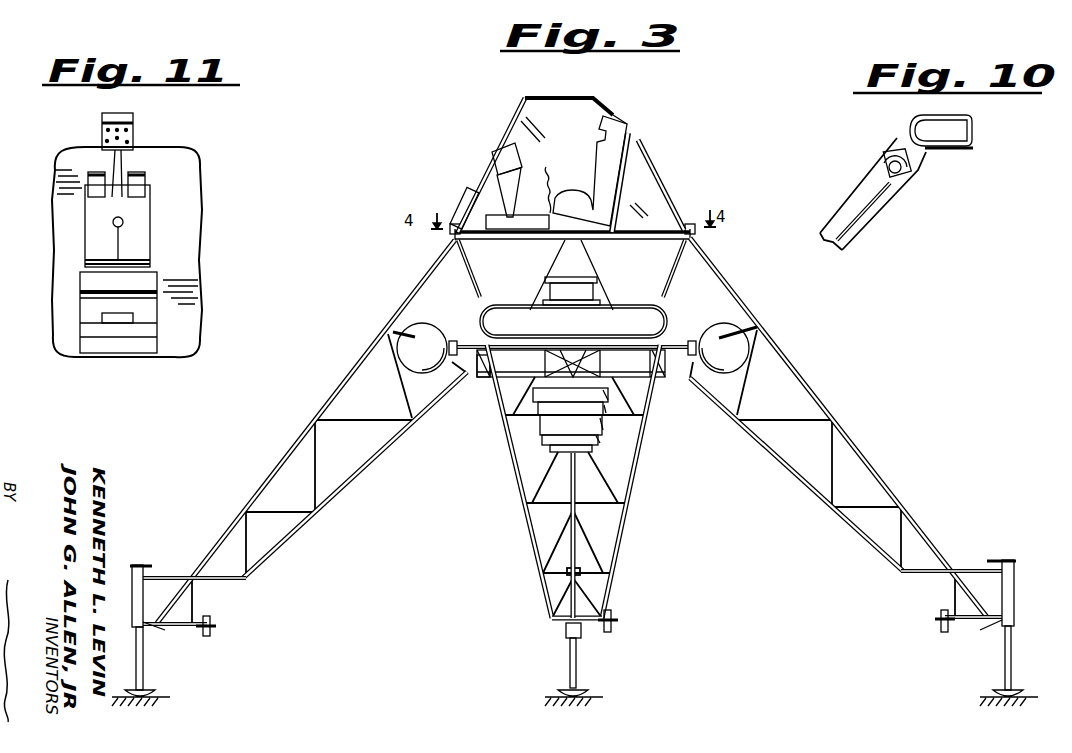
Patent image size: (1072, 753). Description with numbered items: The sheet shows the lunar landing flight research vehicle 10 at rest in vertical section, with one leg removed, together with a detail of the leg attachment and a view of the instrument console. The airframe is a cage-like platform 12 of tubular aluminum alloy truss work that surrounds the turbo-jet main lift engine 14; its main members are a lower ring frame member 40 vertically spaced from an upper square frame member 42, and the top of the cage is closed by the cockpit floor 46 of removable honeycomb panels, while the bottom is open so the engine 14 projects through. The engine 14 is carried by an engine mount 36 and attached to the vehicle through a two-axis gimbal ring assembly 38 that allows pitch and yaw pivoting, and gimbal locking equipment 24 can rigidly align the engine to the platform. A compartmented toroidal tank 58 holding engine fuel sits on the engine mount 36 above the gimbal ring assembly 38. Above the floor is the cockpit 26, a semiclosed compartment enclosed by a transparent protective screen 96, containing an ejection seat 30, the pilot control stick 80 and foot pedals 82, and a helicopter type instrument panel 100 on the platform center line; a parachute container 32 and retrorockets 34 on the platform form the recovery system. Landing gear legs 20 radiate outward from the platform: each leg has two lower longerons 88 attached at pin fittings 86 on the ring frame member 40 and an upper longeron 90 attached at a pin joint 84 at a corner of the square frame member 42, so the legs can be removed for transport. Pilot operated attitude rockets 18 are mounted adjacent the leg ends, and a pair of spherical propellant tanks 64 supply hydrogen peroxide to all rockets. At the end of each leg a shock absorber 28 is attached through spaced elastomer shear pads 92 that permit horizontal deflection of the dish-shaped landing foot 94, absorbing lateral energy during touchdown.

In FIG. 3, the lunar landing flight research vehicle 10 is at (413, 282).
In FIG. 10, the lunar landing flight research vehicle 10 is at (856, 191).
In FIG. 3, the platform 12 is at (676, 278).
In FIG. 3, the turbo-jet main lift engine 14 is at (570, 419).
In FIG. 3, the vehicle attitude rockets 18 is at (214, 625).
In FIG. 3, the landing gear legs 20 is at (312, 421).
In FIG. 3, the gimbal locking equipment 24 is at (592, 366).
In FIG. 3, the cockpit 26 is at (505, 134).
In FIG. 3, the shock absorber 28 is at (143, 565).
In FIG. 3, the ejection seat 30 is at (626, 127).
In FIG. 11, the ejection seat 30 is at (148, 347).
In FIG. 3, the parachute container 32 is at (453, 201).
In FIG. 3, the retrorockets 34 is at (452, 364).
In FIG. 3, the engine mount 36 is at (468, 378).
In FIG. 3, the two-axis gimbal ring assembly 38 is at (670, 342).
In FIG. 3, the lower ring frame member 40 is at (459, 342).
In FIG. 3, the upper square frame member 42 is at (690, 226).
In FIG. 10, the upper square frame member 42 is at (973, 131).
In FIG. 3, the cockpit floor 46 is at (662, 206).
In FIG. 3, the compartmented toroidal tank 58 is at (573, 321).
In FIG. 3, the spherical propellant tanks 64 is at (575, 348).
In FIG. 3, the pilot control stick 80 is at (549, 171).
In FIG. 11, the pilot control stick 80 is at (122, 232).
In FIG. 3, the foot pedals 82 is at (495, 214).
In FIG. 11, the foot pedals 82 is at (137, 173).
In FIG. 3, the pin joints 84 is at (452, 240).
In FIG. 10, the pin joints 84 is at (900, 172).
In FIG. 3, the pin fittings 86 is at (500, 352).
In FIG. 3, the lower longerons 88 is at (283, 549).
In FIG. 3, the upper longeron 90 is at (278, 468).
In FIG. 3, the elastomer shear pads 92 is at (165, 576).
In FIG. 3, the dish-shaped landing foot 94 is at (152, 690).
In FIG. 3, the transparent protective screen 96 is at (545, 116).
In FIG. 3, the instrument panel 100 is at (492, 153).
In FIG. 11, the instrument panel 100 is at (133, 120).